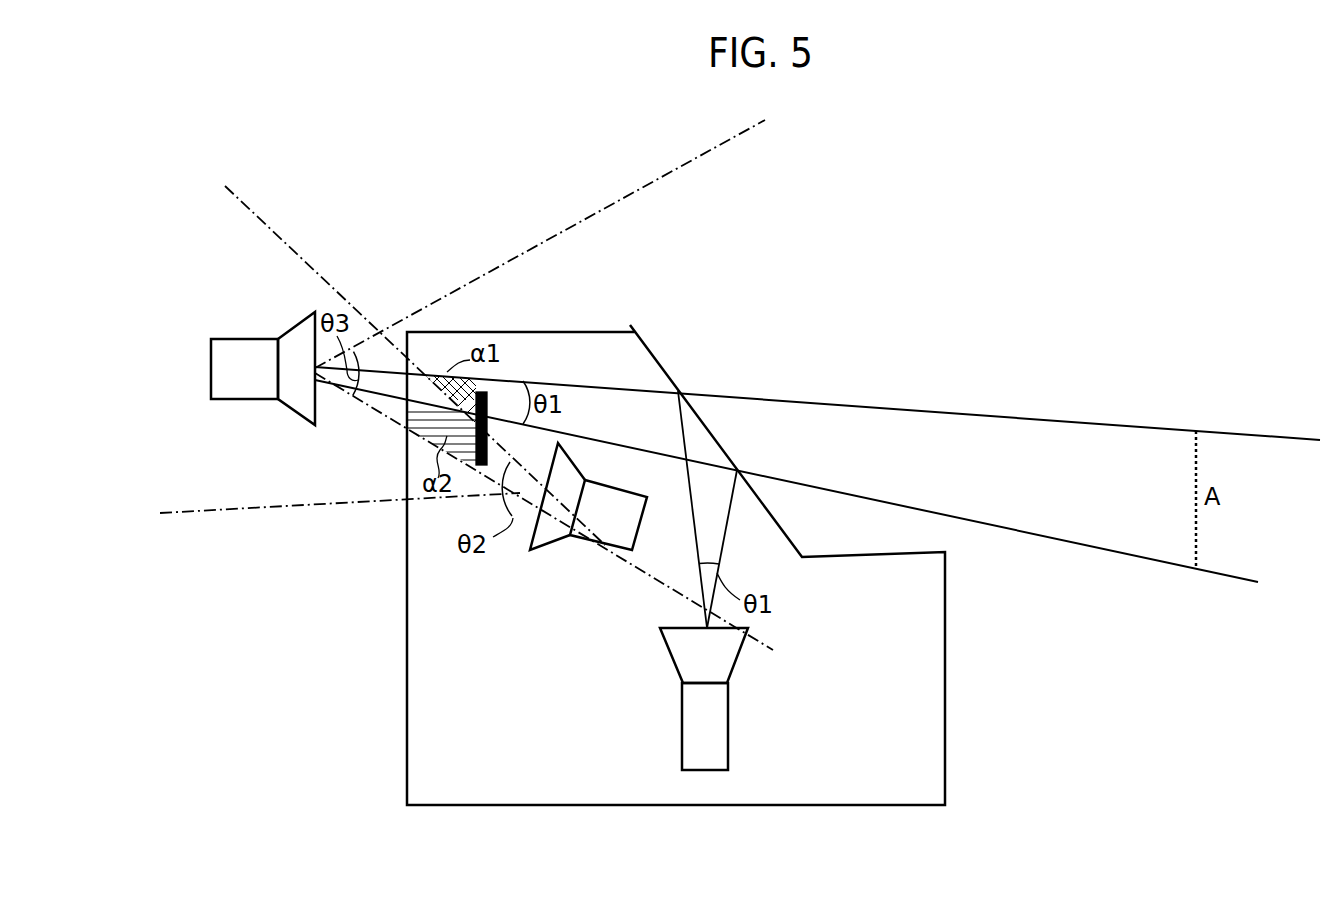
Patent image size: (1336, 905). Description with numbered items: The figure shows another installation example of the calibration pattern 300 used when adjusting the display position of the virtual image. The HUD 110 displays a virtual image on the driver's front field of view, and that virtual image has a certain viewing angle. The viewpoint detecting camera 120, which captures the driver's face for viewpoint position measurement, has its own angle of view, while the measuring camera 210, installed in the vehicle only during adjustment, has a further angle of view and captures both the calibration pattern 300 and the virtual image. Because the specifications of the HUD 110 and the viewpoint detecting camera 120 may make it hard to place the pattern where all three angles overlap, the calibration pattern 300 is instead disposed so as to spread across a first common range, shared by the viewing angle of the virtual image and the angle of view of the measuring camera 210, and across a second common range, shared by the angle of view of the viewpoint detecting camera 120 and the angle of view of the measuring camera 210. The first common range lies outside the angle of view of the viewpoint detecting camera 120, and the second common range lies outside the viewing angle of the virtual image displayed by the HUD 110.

The HUD 110 is at (705, 770).
The viewpoint detecting camera 120 is at (587, 540).
The measuring camera 210 is at (297, 323).
The calibration pattern 300 is at (486, 392).